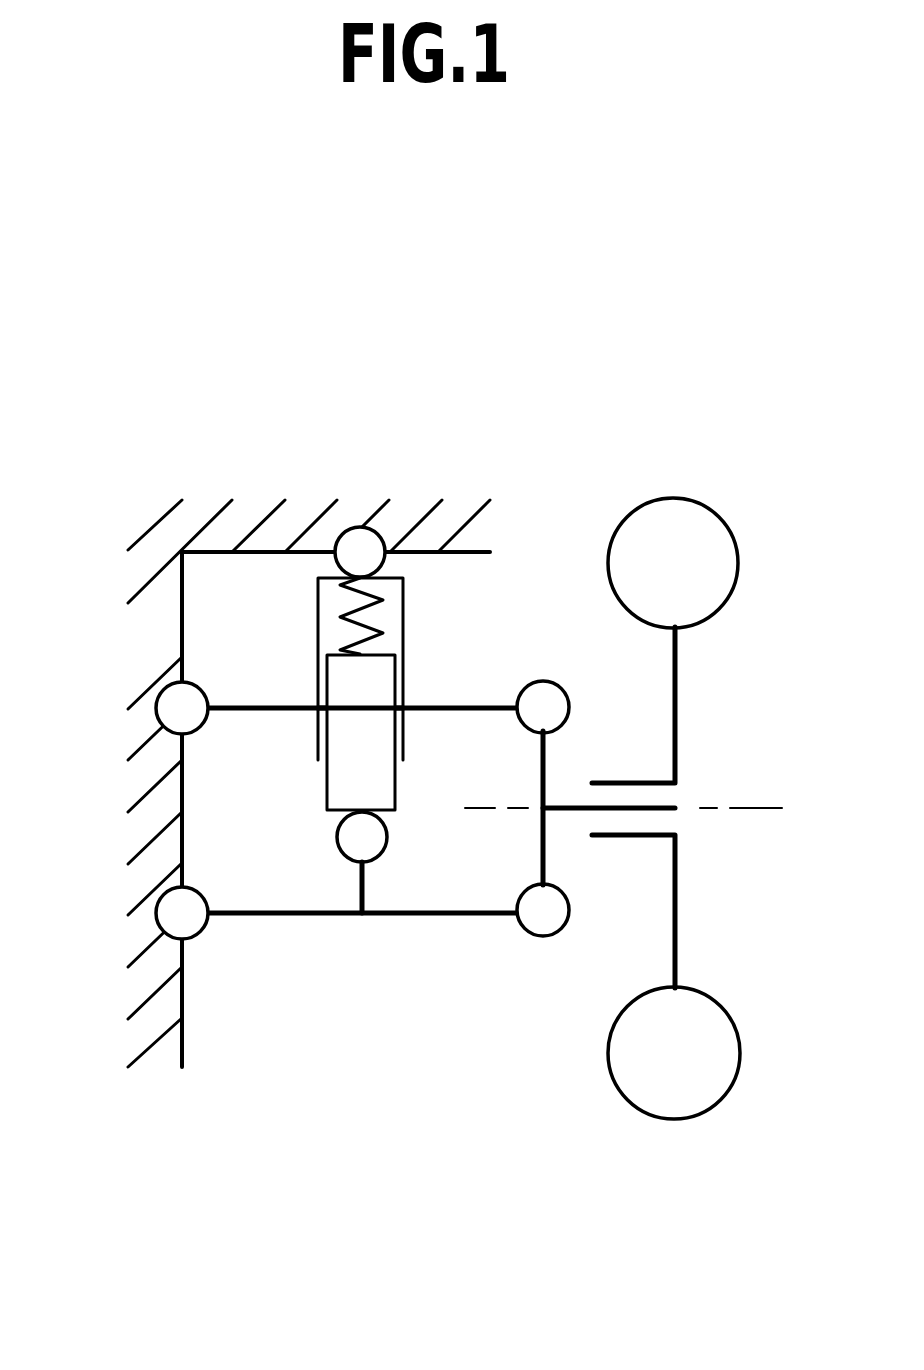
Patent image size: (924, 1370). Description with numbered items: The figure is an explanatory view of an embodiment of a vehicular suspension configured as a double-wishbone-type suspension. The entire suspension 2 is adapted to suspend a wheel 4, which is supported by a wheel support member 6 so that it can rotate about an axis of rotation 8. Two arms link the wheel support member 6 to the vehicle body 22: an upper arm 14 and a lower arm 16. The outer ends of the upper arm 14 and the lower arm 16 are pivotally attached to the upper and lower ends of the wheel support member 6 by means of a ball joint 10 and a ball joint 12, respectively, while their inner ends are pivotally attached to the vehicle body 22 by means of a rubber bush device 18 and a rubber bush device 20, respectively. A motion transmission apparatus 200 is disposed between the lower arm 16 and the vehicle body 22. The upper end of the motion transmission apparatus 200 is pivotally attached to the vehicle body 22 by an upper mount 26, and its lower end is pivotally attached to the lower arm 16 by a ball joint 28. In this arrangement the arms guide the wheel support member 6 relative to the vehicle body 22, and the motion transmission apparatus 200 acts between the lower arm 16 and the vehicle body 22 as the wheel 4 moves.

The suspension 2 is at (533, 518).
The wheel 4 is at (738, 558).
The wheel support member 6 is at (548, 758).
The axis of rotation 8 is at (723, 807).
The ball joint 10 is at (542, 680).
The ball joint 12 is at (540, 936).
The upper arm 14 is at (243, 703).
The lower arm 16 is at (272, 915).
The rubber bush device 18 is at (167, 706).
The rubber bush device 20 is at (170, 912).
The vehicle body 22 is at (148, 558).
The upper mount 26 is at (360, 545).
The ball joint 28 is at (388, 845).
The motion transmission apparatus 200 is at (305, 620).